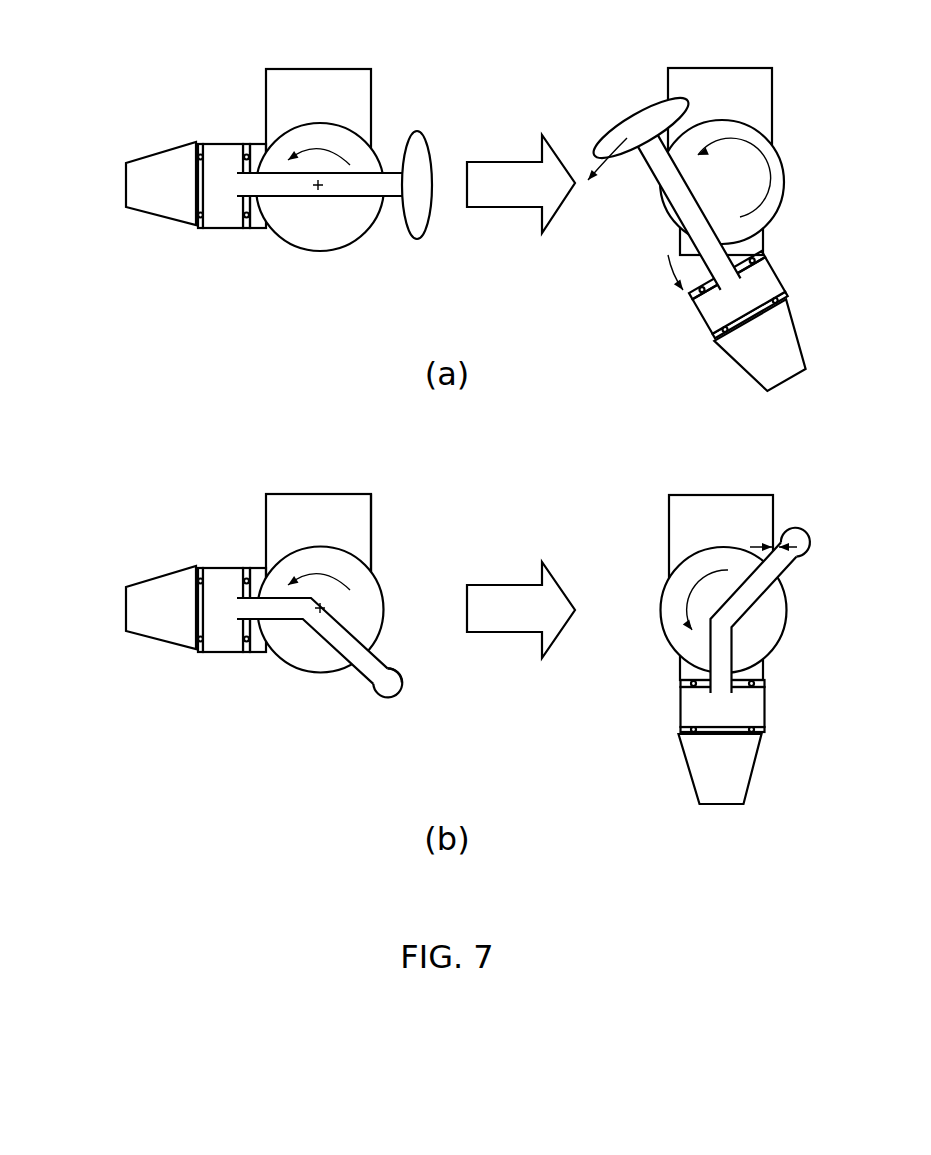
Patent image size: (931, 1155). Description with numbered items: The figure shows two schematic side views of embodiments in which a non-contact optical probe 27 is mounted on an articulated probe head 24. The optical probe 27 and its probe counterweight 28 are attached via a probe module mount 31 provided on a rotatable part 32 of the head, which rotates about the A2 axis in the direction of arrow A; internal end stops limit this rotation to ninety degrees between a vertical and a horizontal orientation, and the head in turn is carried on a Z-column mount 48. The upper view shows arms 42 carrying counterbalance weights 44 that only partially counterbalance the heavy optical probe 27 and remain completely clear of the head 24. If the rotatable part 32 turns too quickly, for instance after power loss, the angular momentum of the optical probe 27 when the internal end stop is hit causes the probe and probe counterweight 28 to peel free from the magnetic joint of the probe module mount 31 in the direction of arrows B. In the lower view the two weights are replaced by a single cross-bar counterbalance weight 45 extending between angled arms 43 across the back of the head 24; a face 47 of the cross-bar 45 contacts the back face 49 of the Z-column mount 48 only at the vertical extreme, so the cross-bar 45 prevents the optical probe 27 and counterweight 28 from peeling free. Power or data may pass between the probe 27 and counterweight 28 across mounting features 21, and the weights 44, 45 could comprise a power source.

The articulated probe head 24 is at (263, 377).
The Z-column mount 48 is at (280, 100).
The back face 49 is at (373, 512).
The mounting features 21 is at (247, 143).
The optical probe 27 is at (142, 228).
The probe counterweight 28 is at (222, 248).
The probe module mount 31 is at (263, 230).
The rotatable part 32 is at (312, 240).
The arms 42 is at (348, 178).
The arms 43 is at (358, 643).
The counterbalance weights 44 is at (417, 155).
The cross-bar counterbalance weight 45 is at (387, 684).
The face 47 is at (395, 664).
The A2 axis A2 is at (318, 185).
The arrow A is at (535, 375).
The arrows B is at (635, 217).